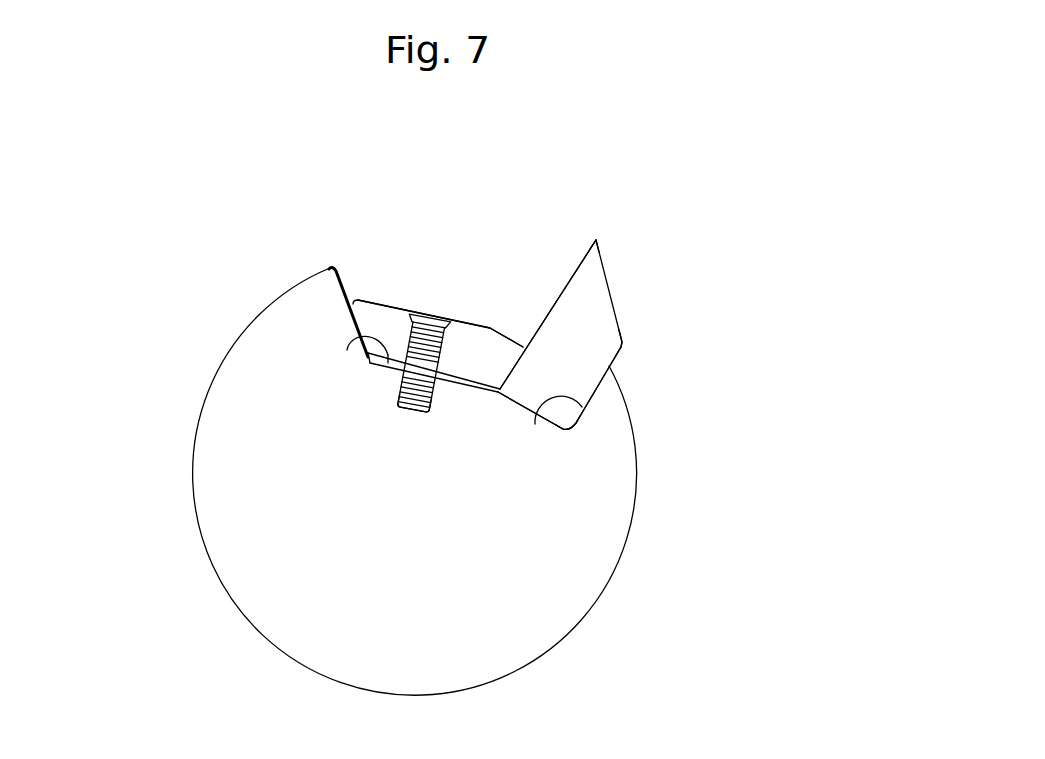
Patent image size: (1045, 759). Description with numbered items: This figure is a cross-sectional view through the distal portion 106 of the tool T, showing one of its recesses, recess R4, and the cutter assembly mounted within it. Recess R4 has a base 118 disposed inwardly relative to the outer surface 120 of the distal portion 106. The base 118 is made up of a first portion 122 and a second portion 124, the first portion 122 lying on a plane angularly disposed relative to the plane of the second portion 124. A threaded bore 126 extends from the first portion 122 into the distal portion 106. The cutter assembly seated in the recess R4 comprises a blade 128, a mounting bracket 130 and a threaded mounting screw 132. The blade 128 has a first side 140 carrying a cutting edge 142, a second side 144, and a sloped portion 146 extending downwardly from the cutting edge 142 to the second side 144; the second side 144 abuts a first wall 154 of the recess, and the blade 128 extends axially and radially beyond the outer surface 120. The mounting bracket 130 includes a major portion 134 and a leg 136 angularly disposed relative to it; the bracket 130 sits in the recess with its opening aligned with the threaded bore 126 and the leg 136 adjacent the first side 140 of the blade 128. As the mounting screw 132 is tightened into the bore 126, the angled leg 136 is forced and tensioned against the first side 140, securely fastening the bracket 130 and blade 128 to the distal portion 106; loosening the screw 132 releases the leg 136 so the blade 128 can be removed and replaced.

The distal portion 106 is at (156, 460).
The base 118 is at (462, 412).
The outer surface 120 is at (613, 575).
The first portion 122 is at (347, 350).
The second portion 124 is at (575, 422).
The threaded bore 126 is at (406, 432).
The blade 128 is at (585, 313).
The mounting bracket 130 is at (476, 309).
The threaded mounting screw 132 is at (419, 313).
The major portion 134 is at (367, 307).
The leg 136 is at (505, 353).
The first side 140 is at (574, 273).
The cutting edge 142 is at (596, 240).
The second side 144 is at (595, 392).
The sloped portion 146 is at (623, 344).
The first wall 154 is at (535, 424).
The recess R4 is at (452, 216).
The tool T is at (636, 147).